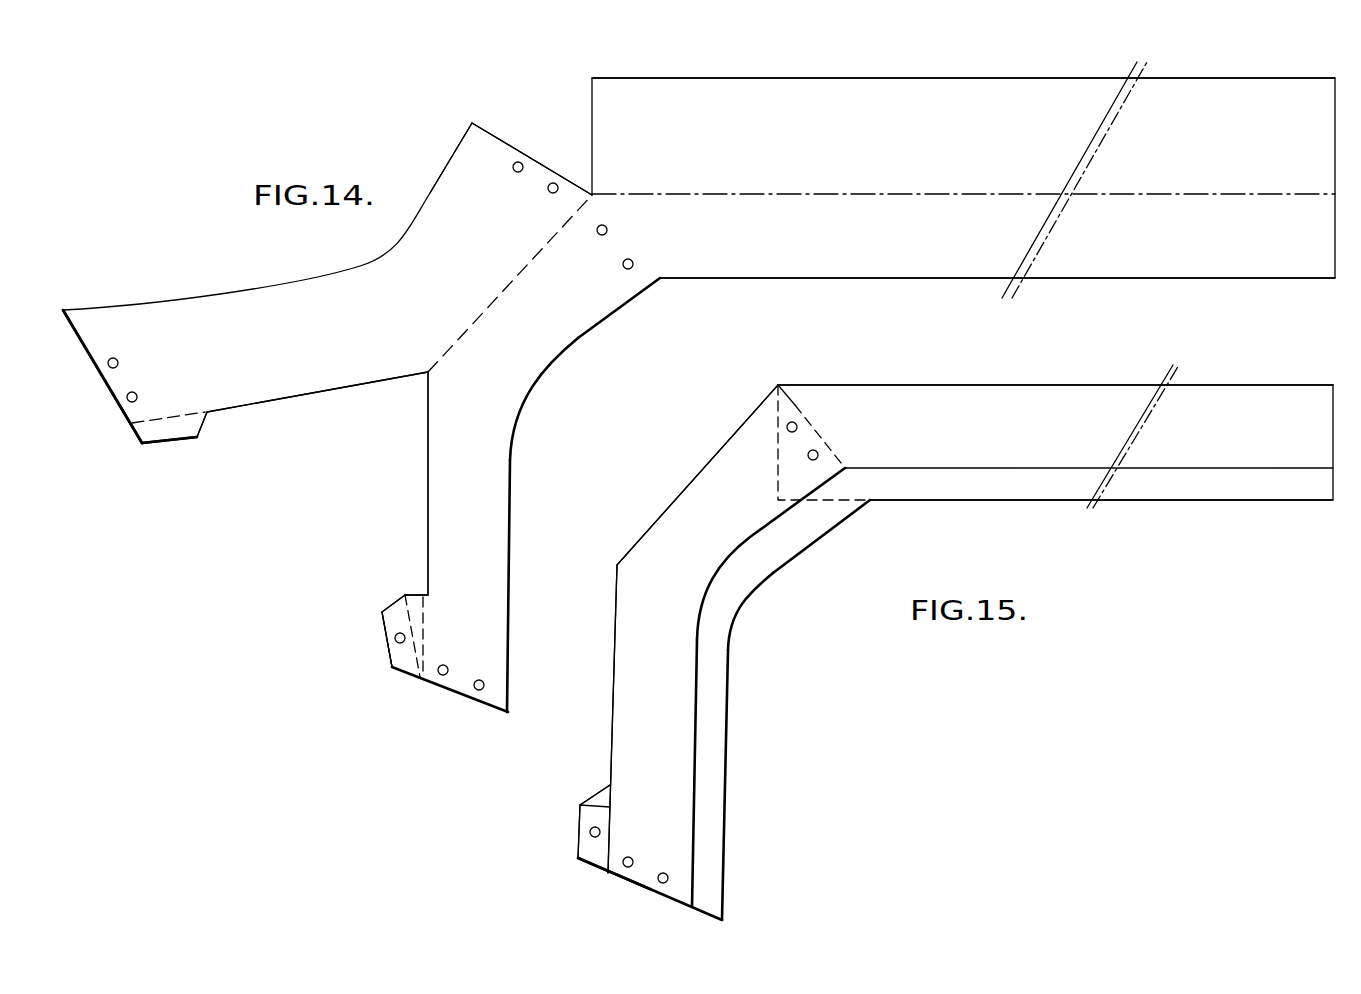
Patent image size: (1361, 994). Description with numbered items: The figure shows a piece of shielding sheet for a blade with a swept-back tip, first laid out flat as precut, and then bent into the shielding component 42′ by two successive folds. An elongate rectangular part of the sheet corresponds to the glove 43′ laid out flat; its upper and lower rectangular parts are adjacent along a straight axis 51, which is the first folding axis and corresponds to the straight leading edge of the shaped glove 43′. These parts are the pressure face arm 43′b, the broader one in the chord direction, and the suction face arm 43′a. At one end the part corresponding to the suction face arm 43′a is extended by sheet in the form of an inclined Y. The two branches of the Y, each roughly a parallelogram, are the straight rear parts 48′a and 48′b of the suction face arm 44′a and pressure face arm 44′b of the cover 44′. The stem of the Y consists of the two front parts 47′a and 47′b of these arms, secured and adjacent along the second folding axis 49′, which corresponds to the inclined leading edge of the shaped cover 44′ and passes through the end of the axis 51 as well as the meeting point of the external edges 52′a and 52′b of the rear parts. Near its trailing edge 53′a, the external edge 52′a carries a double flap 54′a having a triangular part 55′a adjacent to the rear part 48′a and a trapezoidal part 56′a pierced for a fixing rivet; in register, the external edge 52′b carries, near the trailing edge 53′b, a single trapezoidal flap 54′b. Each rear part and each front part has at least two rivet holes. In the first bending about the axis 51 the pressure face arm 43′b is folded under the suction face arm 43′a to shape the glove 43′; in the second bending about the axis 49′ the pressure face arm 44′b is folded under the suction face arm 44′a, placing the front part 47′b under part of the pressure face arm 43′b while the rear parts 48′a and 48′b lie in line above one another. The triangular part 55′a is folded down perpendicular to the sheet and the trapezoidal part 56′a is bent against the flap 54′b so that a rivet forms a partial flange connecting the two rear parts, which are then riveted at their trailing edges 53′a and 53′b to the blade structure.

In FIG. 15, the shielding component 42′ is at (813, 385).
In FIG. 14, the glove 43′ is at (1227, 218).
In FIG. 15, the glove 43′ is at (1195, 405).
In FIG. 14, the suction face arm 43′a is at (1108, 250).
In FIG. 15, the suction face arm 43′a is at (1263, 413).
In FIG. 14, the pressure face arm 43′b is at (868, 157).
In FIG. 15, the pressure face arm 43′b is at (1245, 482).
In FIG. 14, the cover 44′ is at (418, 385).
In FIG. 15, the cover 44′ is at (602, 758).
In FIG. 14, the suction face arm 44′a is at (492, 403).
In FIG. 15, the suction face arm 44′a is at (687, 583).
In FIG. 14, the pressure face arm 44′b is at (270, 305).
In FIG. 15, the pressure face arm 44′b is at (710, 640).
In FIG. 14, the front part 47′a is at (570, 322).
In FIG. 15, the front part 47′a is at (722, 468).
In FIG. 14, the front part 47′b is at (458, 173).
In FIG. 15, the front part 47′b is at (815, 520).
In FIG. 14, the rear part 48′a is at (480, 527).
In FIG. 15, the rear part 48′a is at (675, 688).
In FIG. 14, the rear part 48′b is at (287, 373).
In FIG. 15, the rear part 48′b is at (707, 757).
In FIG. 14, the second folding axis 49′ is at (577, 207).
In FIG. 15, the second folding axis 49′ is at (665, 508).
In FIG. 14, the straight axis 51 is at (915, 192).
In FIG. 15, the straight axis 51 is at (1047, 385).
In FIG. 14, the external edge 52′a is at (425, 487).
In FIG. 14, the external edge 52′b is at (245, 405).
In FIG. 14, the trailing edge 53′a is at (448, 692).
In FIG. 15, the trailing edge 53′a is at (620, 878).
In FIG. 14, the trailing edge 53′b is at (115, 405).
In FIG. 15, the trailing edge 53′b is at (614, 873).
In FIG. 14, the double flap 54′a is at (390, 668).
In FIG. 14, the trapezoidal flap 54′b is at (167, 430).
In FIG. 14, the triangular part 55′a is at (405, 595).
In FIG. 15, the triangular part 55′a is at (580, 805).
In FIG. 14, the trapezoidal part 56′a is at (397, 615).
In FIG. 15, the trapezoidal part 56′a is at (580, 847).